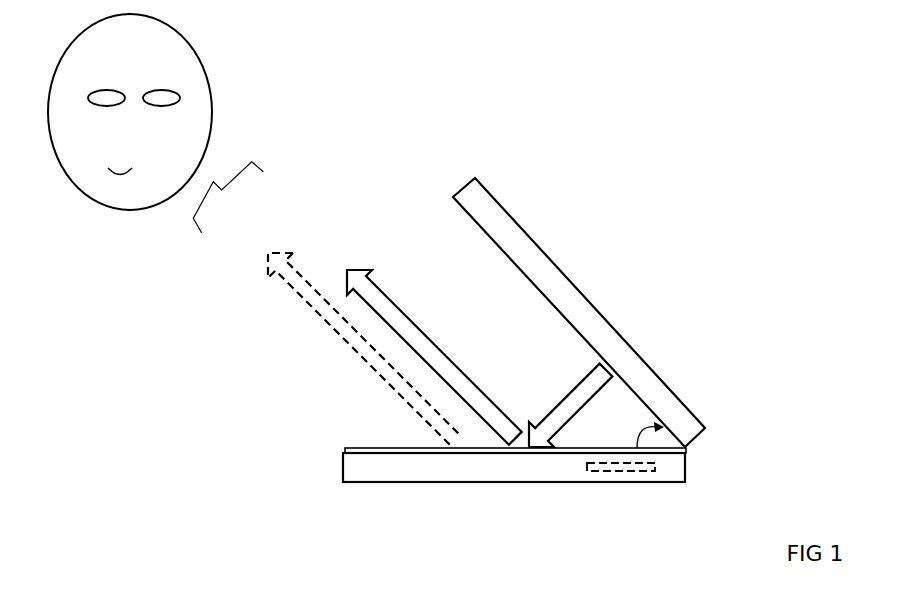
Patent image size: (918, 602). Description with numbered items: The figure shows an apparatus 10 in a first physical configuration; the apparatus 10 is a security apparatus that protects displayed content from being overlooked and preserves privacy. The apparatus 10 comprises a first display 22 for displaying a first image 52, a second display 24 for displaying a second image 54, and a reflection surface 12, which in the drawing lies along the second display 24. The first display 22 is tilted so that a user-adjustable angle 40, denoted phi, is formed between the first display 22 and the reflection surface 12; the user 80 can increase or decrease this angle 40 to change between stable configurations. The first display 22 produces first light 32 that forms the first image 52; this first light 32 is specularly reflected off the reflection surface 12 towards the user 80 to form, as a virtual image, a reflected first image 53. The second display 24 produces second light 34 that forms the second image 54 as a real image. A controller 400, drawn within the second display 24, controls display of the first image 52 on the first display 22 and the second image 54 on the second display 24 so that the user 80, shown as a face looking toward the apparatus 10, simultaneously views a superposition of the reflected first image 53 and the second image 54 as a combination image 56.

The apparatus 10 is at (690, 185).
The reflection surface 12 is at (403, 450).
The first display 22 is at (463, 217).
The second display 24 is at (362, 460).
The first light 32 is at (477, 360).
The second light 34 is at (363, 378).
The angle 40 is at (633, 423).
The first image 52 is at (605, 373).
The reflected first image 53 is at (350, 270).
The second image 54 is at (270, 268).
The combination image 56 is at (214, 182).
The user 80 is at (195, 78).
The controller 400 is at (638, 467).